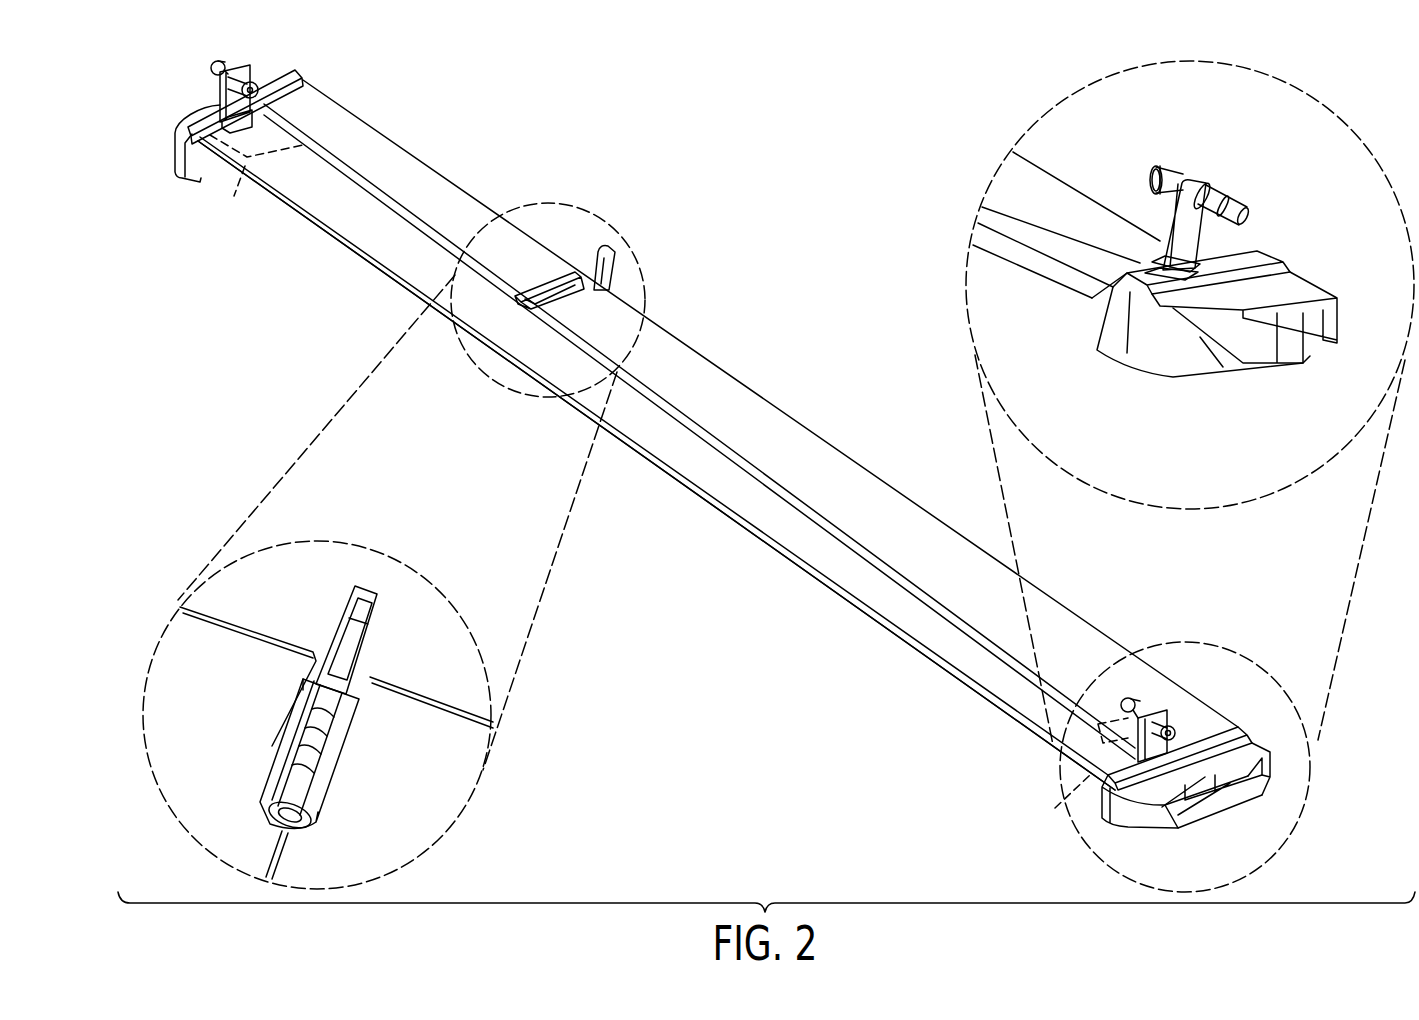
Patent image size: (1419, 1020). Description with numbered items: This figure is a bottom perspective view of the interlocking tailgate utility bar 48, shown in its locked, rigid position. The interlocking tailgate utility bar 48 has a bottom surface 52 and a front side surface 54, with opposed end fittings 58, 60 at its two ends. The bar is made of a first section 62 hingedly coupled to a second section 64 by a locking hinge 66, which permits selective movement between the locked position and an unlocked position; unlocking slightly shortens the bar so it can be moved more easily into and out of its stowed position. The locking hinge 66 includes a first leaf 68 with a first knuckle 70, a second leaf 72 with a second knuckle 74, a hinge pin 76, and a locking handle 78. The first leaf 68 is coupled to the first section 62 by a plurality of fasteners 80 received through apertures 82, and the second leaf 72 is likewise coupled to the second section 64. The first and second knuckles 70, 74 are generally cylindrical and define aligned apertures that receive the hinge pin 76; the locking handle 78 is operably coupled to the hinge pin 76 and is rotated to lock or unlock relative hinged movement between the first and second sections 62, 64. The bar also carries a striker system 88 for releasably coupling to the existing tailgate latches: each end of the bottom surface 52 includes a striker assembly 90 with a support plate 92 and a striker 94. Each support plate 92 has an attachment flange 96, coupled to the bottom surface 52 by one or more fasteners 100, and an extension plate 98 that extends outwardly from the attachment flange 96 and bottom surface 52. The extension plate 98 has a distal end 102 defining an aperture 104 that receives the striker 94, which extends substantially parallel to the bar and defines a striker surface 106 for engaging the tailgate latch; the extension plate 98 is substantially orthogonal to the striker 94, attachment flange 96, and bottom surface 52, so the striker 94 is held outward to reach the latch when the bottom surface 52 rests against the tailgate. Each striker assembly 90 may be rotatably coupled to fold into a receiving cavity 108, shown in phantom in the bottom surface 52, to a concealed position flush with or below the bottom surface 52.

The interlocking tailgate utility bar 48 is at (706, 464).
The bottom surface 52 is at (1010, 168).
The front side surface 54 is at (862, 609).
The end fitting 58 is at (306, 80).
The end fitting 60 is at (1302, 288).
The first section 62 is at (446, 140).
The second section 64 is at (905, 478).
The locking hinge 66 is at (362, 562).
The first leaf 68 is at (302, 708).
The first knuckle 70 is at (296, 785).
The second leaf 72 is at (350, 722).
The second knuckle 74 is at (320, 760).
The hinge pin 76 is at (304, 824).
The locking handle 78 is at (362, 640).
The fasteners 80 is at (302, 735).
The apertures 82 is at (292, 765).
The striker system 88 is at (142, 86).
The striker assembly 90 is at (1201, 230).
The support plate 92 is at (1222, 242).
The striker 94 is at (1152, 170).
The attachment flange 96 is at (1140, 272).
The extension plate 98 is at (1175, 215).
The fasteners 100 is at (1156, 258).
The distal end 102 is at (1206, 182).
The aperture 104 is at (1228, 196).
The striker surface 106 is at (1183, 176).
The receiving cavity 108 is at (669, 484).